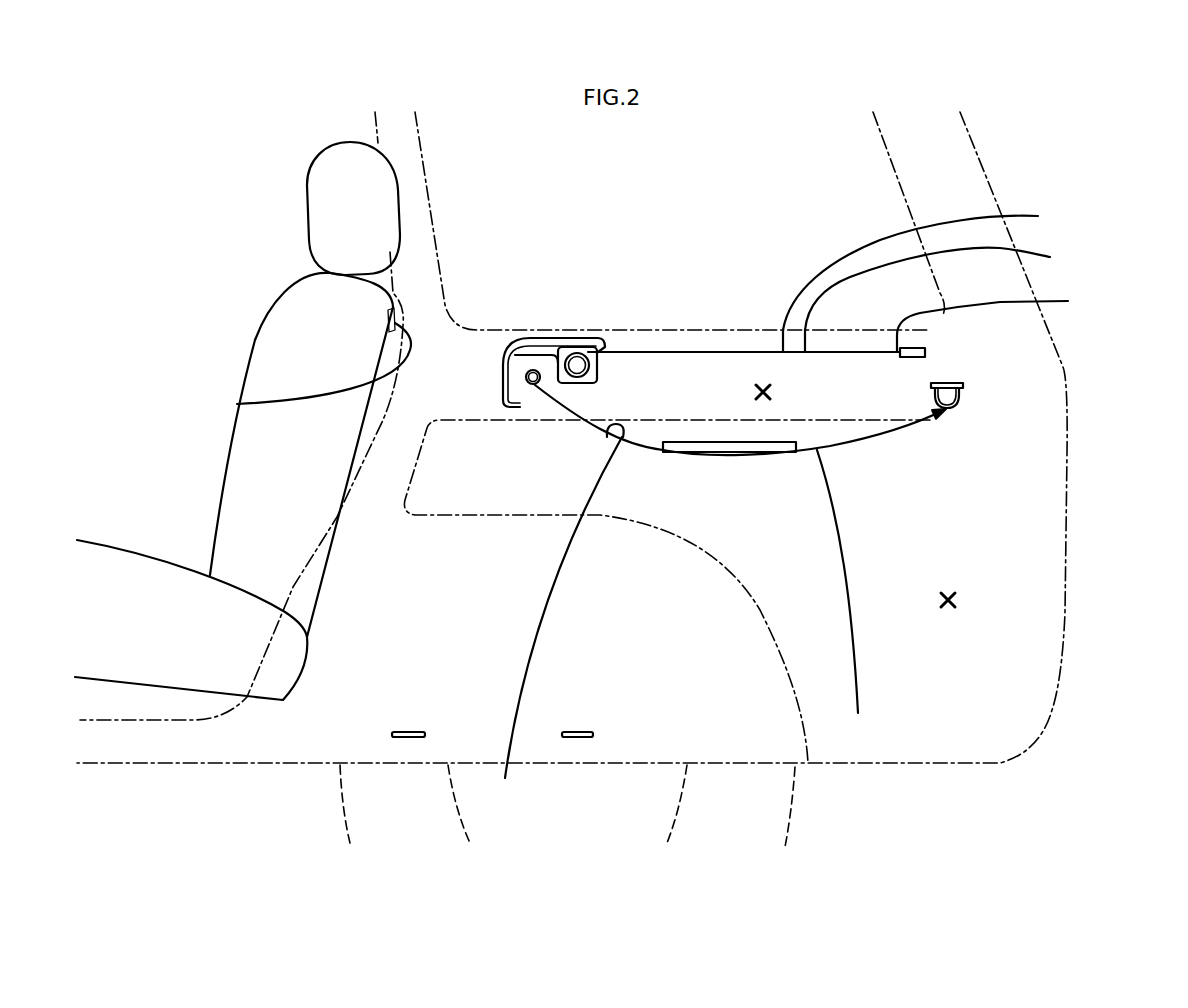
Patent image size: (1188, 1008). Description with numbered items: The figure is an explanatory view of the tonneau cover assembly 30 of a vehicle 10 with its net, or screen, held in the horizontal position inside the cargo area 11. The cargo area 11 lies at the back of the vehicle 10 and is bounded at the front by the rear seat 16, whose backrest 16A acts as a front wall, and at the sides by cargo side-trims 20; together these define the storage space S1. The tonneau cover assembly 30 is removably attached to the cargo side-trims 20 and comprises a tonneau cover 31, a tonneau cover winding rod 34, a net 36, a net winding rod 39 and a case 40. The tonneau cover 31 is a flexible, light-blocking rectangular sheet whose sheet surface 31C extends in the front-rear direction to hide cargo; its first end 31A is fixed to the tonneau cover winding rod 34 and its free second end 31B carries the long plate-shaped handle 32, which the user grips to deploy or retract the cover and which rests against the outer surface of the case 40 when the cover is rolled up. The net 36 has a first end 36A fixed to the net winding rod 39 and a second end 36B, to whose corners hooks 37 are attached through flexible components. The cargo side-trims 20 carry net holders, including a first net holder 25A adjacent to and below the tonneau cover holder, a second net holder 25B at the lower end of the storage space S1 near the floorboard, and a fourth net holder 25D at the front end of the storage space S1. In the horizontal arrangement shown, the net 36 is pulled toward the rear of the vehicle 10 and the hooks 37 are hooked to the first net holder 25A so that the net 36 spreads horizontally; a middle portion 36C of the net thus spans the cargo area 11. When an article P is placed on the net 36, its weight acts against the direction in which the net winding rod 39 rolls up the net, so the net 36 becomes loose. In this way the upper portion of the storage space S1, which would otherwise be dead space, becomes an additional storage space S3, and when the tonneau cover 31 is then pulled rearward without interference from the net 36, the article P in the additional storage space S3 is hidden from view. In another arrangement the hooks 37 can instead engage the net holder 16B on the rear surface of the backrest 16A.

The vehicle 10 is at (1030, 168).
The cargo area 11 is at (1012, 643).
The rear seat 16 is at (228, 366).
The backrest 16A is at (262, 326).
The net holder 16B is at (237, 404).
The cargo side-trim 20 is at (928, 567).
The first net holder 25A is at (963, 404).
The second net holder 25B is at (577, 737).
The fourth net holder 25D is at (408, 737).
The tonneau cover assembly 30 is at (538, 331).
The tonneau cover 31 is at (943, 297).
The first end 31A is at (578, 353).
The second end 31B is at (1005, 322).
The sheet surface 31C is at (933, 279).
The handle 32 is at (925, 353).
The tonneau cover winding rod 34 is at (597, 368).
The net 36 is at (858, 713).
The first end 36A is at (527, 375).
The second end 36B is at (950, 413).
The webbing lower portion 36C is at (557, 616).
The hook 37 is at (957, 407).
The net winding rod 39 is at (541, 382).
The case 40 is at (515, 355).
The article P is at (742, 452).
The storage space S1 is at (957, 598).
The additional storage space S3 is at (772, 393).